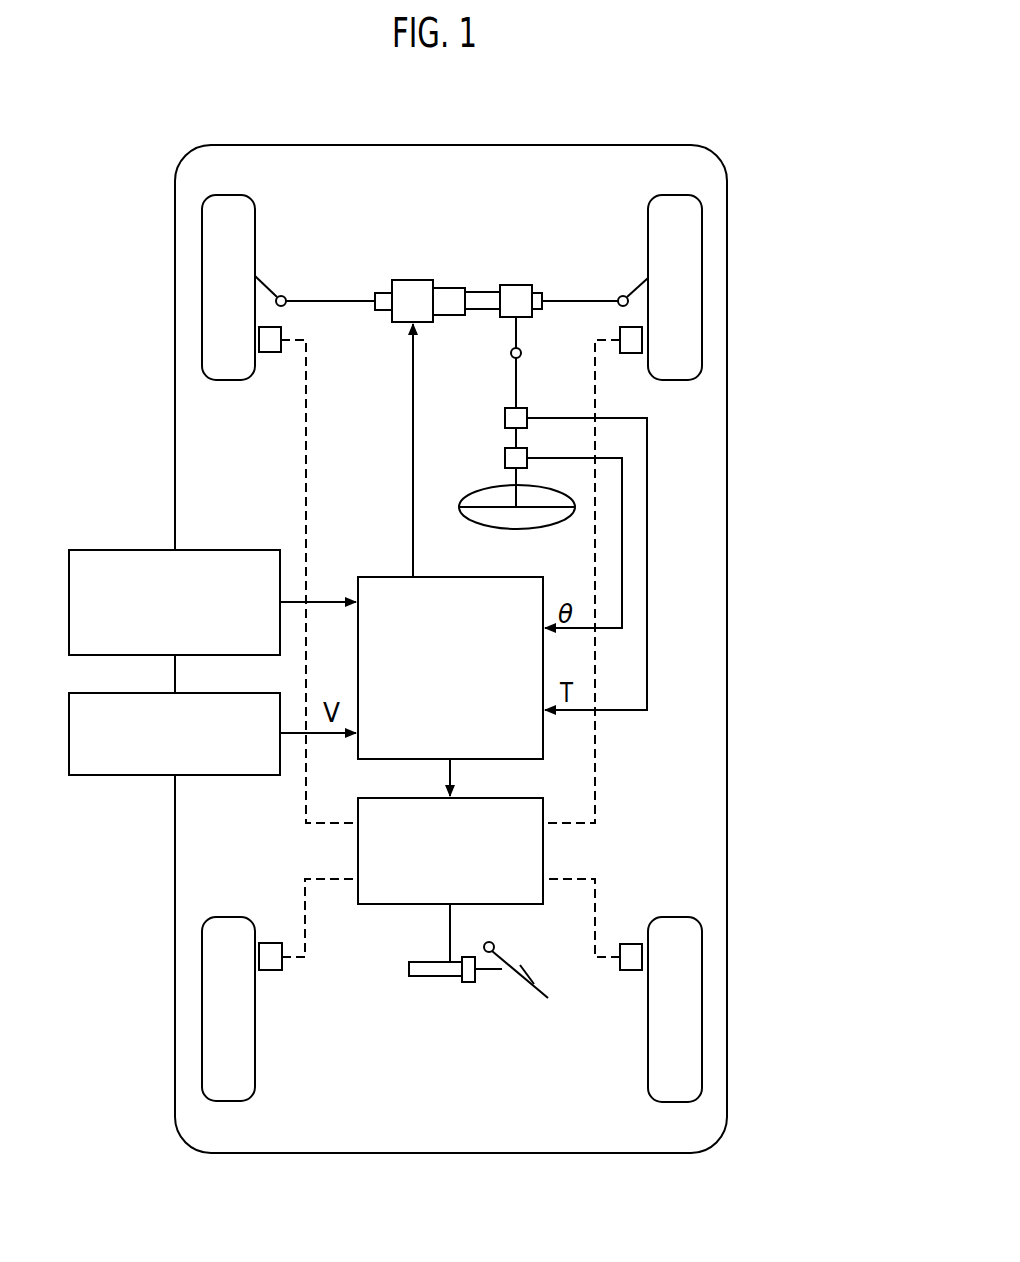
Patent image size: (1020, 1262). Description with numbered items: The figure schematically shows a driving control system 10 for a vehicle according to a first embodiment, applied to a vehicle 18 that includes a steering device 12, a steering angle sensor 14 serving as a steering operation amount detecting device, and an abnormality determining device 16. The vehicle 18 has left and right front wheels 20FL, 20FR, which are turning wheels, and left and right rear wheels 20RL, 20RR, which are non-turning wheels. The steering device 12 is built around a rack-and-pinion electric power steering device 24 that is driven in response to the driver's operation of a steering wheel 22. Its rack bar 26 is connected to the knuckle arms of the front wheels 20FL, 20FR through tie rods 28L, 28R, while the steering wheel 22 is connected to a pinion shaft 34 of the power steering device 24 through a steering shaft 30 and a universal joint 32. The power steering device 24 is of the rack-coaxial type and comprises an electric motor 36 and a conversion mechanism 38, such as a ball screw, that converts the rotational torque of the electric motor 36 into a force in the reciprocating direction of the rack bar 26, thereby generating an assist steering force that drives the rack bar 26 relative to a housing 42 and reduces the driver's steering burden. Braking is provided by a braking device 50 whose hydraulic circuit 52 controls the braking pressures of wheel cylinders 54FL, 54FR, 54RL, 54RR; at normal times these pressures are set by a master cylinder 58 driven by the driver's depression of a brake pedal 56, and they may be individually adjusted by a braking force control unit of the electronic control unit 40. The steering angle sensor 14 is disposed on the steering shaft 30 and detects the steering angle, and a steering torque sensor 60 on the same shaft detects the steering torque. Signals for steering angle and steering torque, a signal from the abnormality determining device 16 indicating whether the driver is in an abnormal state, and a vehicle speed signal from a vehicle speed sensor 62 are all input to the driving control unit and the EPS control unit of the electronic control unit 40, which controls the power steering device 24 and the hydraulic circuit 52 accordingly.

The driving control system 10 is at (486, 250).
The steering device 12 is at (475, 444).
The steering angle sensor 14 is at (505, 457).
The abnormality determining device 16 is at (118, 548).
The vehicle 18 is at (727, 552).
The left front wheel 20FL is at (202, 300).
The right front wheel 20FR is at (702, 300).
The left rear wheel 20RL is at (202, 1015).
The right rear wheel 20RR is at (702, 1020).
The steering wheel 22 is at (480, 528).
The electric power steering device 24 is at (420, 314).
The rack bar 26 is at (337, 297).
The left tie rod 28L is at (278, 294).
The right tie rod 28R is at (638, 282).
The steering shaft 30 is at (516, 383).
The universal joint 32 is at (511, 350).
The pinion shaft 34 is at (516, 334).
The electric motor 36 is at (413, 278).
The conversion mechanism 38 is at (447, 315).
The electronic control unit 40 is at (464, 725).
The housing 42 is at (384, 311).
The braking device 50 is at (481, 971).
The hydraulic circuit 52 is at (463, 893).
The left front wheel cylinder 54FL is at (270, 352).
The right front wheel cylinder 54FR is at (632, 353).
The left rear wheel cylinder 54RL is at (270, 943).
The right rear wheel cylinder 54RR is at (632, 944).
The brake pedal 56 is at (527, 968).
The master cylinder 58 is at (432, 961).
The steering torque sensor 60 is at (505, 417).
The vehicle speed sensor 62 is at (124, 775).